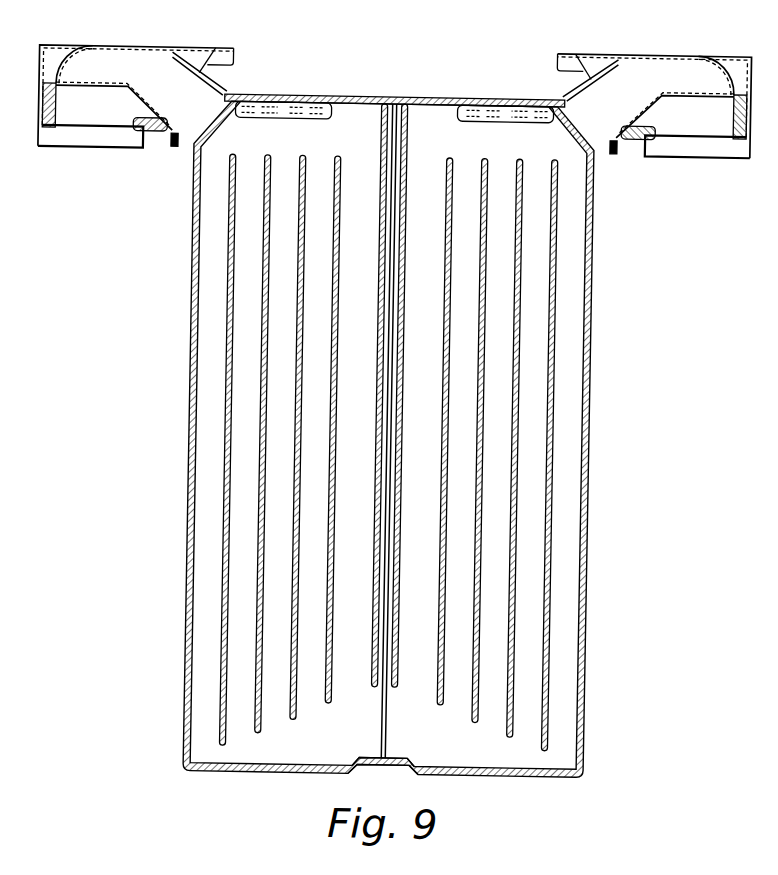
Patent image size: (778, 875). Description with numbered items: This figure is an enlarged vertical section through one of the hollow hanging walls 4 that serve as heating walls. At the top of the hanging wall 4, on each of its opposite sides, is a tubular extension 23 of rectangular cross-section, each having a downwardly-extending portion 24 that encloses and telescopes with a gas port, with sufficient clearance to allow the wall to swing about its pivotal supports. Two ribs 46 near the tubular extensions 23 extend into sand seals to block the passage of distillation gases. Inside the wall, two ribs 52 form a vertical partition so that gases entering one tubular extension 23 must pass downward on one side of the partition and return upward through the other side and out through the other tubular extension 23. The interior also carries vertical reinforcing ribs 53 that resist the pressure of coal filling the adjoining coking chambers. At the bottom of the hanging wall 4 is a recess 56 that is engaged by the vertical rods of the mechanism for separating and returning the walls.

The hanging wall 4 is at (615, 391).
The tubular extension 23 is at (117, 74).
The downwardly-extending portion 24 is at (93, 143).
The rib 46 is at (170, 143).
The rib 52 is at (376, 505).
The vertical reinforcing rib 53 is at (260, 413).
The recess 56 is at (379, 767).